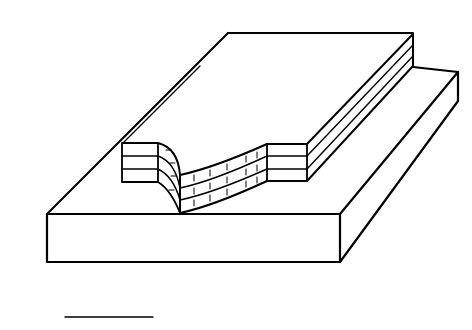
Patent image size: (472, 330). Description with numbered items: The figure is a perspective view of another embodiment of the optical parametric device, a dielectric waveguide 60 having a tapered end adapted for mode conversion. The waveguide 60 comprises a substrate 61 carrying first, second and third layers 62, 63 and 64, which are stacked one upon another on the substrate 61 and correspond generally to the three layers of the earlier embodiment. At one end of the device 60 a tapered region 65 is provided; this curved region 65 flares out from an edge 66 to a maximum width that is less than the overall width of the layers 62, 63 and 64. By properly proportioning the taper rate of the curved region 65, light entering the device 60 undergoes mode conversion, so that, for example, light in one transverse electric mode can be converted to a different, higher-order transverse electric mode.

The waveguide 60 is at (131, 112).
The substrate 61 is at (350, 216).
The first layer 62 is at (319, 157).
The second layer 63 is at (338, 128).
The third layer 64 is at (379, 77).
The tapered region 65 is at (212, 163).
The edge 66 is at (179, 197).